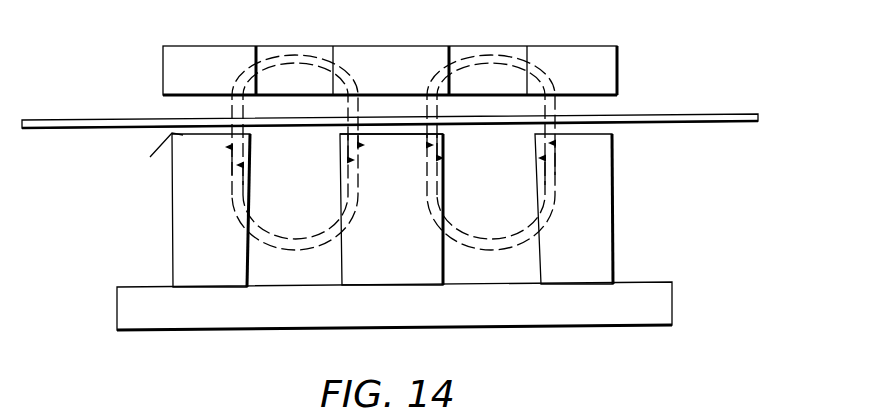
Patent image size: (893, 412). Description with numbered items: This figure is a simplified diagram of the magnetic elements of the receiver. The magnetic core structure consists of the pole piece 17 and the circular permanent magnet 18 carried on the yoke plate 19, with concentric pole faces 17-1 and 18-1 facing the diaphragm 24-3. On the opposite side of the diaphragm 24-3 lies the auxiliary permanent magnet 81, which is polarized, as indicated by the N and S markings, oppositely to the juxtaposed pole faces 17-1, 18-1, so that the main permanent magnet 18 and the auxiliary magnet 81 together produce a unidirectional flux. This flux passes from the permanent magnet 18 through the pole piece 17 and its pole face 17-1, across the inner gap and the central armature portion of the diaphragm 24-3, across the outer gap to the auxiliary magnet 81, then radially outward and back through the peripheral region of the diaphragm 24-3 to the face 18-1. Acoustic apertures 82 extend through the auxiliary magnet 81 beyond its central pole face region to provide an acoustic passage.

The auxiliary permanent magnet 81 is at (607, 62).
The acoustic apertures 82 is at (312, 51).
The diaphragm 24-3 is at (683, 117).
The circular permanent magnet 18 is at (183, 247).
The pole face of the circular permanent magnet 18-1 is at (152, 154).
The pole piece 17 is at (400, 266).
The pole face of the pole piece 17-1 is at (388, 133).
The yoke plate 19 is at (663, 305).